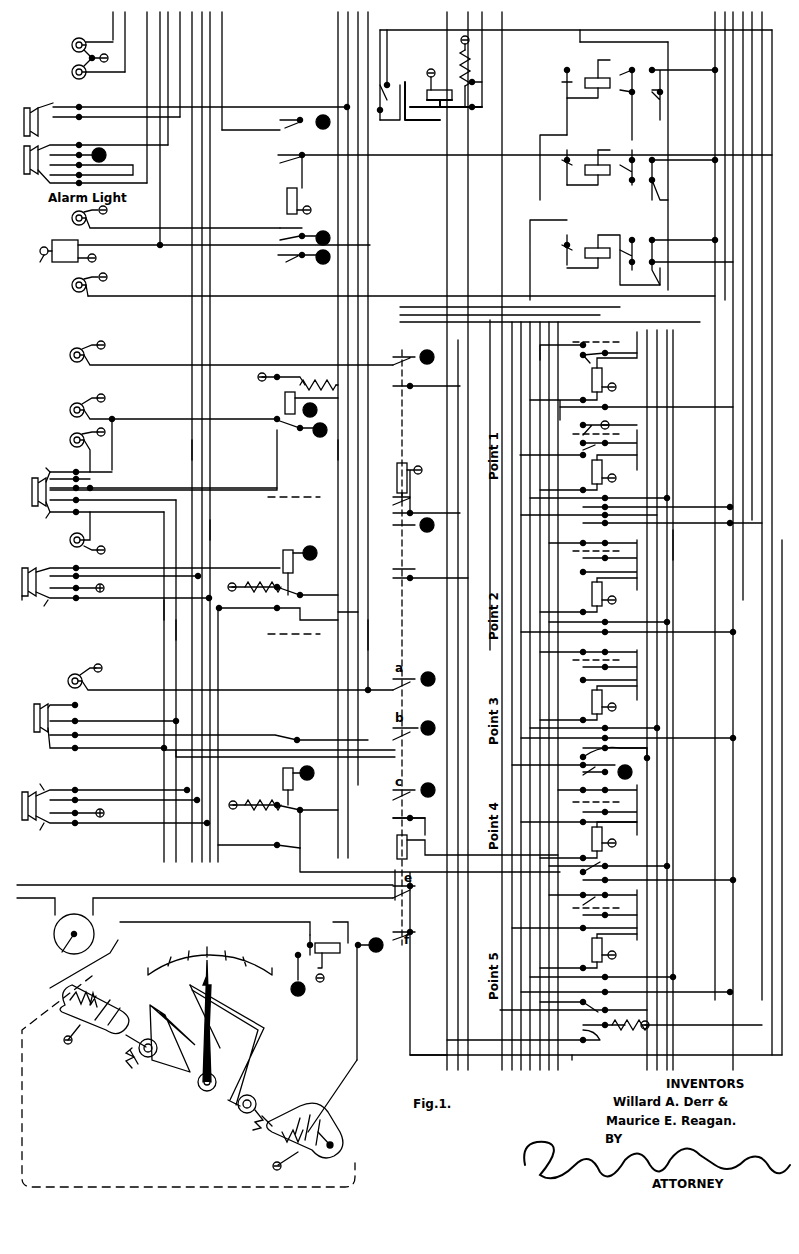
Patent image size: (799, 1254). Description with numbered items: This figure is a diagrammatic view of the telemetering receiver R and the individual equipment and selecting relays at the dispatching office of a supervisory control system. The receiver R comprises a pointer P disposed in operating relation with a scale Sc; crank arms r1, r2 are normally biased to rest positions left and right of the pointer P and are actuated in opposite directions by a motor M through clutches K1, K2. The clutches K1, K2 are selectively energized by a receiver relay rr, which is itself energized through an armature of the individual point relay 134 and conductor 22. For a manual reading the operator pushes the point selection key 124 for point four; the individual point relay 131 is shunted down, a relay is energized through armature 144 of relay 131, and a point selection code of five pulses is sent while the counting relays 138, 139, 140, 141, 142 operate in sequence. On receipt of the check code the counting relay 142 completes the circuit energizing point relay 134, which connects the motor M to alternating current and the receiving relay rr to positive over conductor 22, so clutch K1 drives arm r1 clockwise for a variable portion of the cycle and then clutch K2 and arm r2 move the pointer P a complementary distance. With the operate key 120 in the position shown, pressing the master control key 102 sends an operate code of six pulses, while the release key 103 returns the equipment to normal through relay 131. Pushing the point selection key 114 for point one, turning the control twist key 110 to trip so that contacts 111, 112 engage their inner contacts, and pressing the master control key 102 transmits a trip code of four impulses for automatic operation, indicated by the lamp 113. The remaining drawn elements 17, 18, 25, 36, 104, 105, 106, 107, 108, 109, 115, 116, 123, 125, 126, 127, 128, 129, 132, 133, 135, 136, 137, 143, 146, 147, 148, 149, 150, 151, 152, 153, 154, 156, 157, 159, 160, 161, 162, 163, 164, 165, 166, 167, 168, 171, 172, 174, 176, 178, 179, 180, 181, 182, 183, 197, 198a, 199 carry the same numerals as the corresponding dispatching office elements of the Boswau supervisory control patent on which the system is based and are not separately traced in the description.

The contact 17 is at (72, 44).
The contact 18 is at (72, 72).
The switch 25 is at (286, 124).
The switch shaft 36 is at (368, 636).
The master control key 102 is at (35, 112).
The release key 103 is at (30, 142).
The contact 104 is at (72, 218).
The relay 105 is at (48, 243).
The contact 106 is at (72, 285).
The contact 107 is at (70, 355).
The contact 108 is at (70, 440).
The contact 109 is at (70, 410).
The control twist key 110 is at (34, 490).
The contact 111 is at (48, 470).
The contact 112 is at (48, 514).
The lamp 113 is at (70, 540).
The point selection key 114 is at (30, 596).
The switch blade 115 is at (44, 572).
The switch blade 116 is at (50, 600).
The operate key 120 is at (44, 708).
The contact 123 is at (70, 678).
The point selection key 124 is at (26, 798).
The switch blade 125 is at (46, 822).
The switch blade 126 is at (40, 792).
The relay 127 is at (287, 202).
The relay 128 is at (285, 402).
The relay 129 is at (283, 553).
The individual point relay 131 is at (283, 774).
The rectifier 132 is at (452, 103).
The relay 133 is at (397, 476).
The individual point relay 134 is at (397, 848).
The relay 135 is at (592, 96).
The relay 136 is at (592, 184).
The relay 137 is at (592, 266).
The counting relay 138 is at (592, 383).
The counting relay 139 is at (592, 474).
The counting relay 140 is at (592, 596).
The counting relay 141 is at (592, 704).
The counting relay 142 is at (592, 842).
The relay 143 is at (592, 952).
The armature 144 is at (288, 808).
The conductor 146 is at (192, 450).
The conductor 147 is at (338, 452).
The contact 148 is at (563, 82).
The contact 149 is at (572, 154).
The contact 150 is at (570, 240).
The contact 151 is at (600, 355).
The contact 152 is at (655, 186).
The conductor 153 is at (718, 42).
The contact 154 is at (590, 424).
The contact 156 is at (600, 446).
The contact 157 is at (662, 82).
The contact 159 is at (652, 240).
The contact 160 is at (596, 894).
The contact 161 is at (292, 846).
The conductor 162 is at (210, 532).
The contact 163 is at (596, 868).
The conductor 164 is at (673, 547).
The contact 165 is at (630, 156).
The contact 166 is at (620, 88).
The contact 167 is at (630, 244).
The contact 168 is at (390, 820).
The terminal 171 is at (427, 74).
The conductor 172 is at (574, 1054).
The resistor 174 is at (470, 96).
The switch 176 is at (392, 118).
The conductor 178 is at (164, 612).
The conductor 179 is at (176, 634).
The contact 180 is at (596, 776).
The contact 181 is at (276, 156).
The contact 182 is at (276, 236).
The contact 183 is at (290, 258).
The contact 197 is at (602, 1040).
The contact 198a is at (660, 752).
The contact 199 is at (598, 1006).
The conductor 22 is at (482, 1052).
The motor M is at (54, 936).
The telemetering receiver R is at (188, 1081).
The scale Sc is at (190, 958).
The pointer P is at (204, 1006).
The clutch K1 is at (90, 1000).
The clutch K2 is at (337, 1130).
The crank arm r1 is at (200, 1036).
The crank arm r2 is at (252, 1055).
The receiver relay rr is at (325, 980).